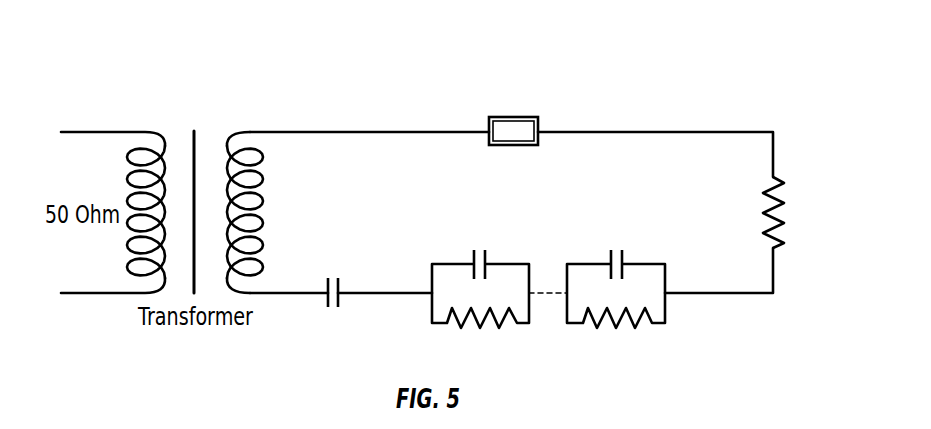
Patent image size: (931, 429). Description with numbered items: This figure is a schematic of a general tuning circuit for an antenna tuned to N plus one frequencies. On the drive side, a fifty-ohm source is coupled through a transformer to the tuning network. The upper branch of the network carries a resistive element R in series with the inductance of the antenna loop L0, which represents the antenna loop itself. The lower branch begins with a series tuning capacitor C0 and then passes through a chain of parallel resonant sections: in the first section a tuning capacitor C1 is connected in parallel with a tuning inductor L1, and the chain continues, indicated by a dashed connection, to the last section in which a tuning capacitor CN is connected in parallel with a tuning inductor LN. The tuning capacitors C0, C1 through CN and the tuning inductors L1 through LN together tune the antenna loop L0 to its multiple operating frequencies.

The resistor R is at (513, 115).
The tuning capacitor C0 is at (332, 306).
The tuning capacitor C1 is at (480, 252).
The tuning inductor L1 is at (480, 327).
The tuning capacitor CN is at (616, 252).
The tuning inductor LN is at (616, 327).
The inductance of the antenna loop L0 is at (787, 212).